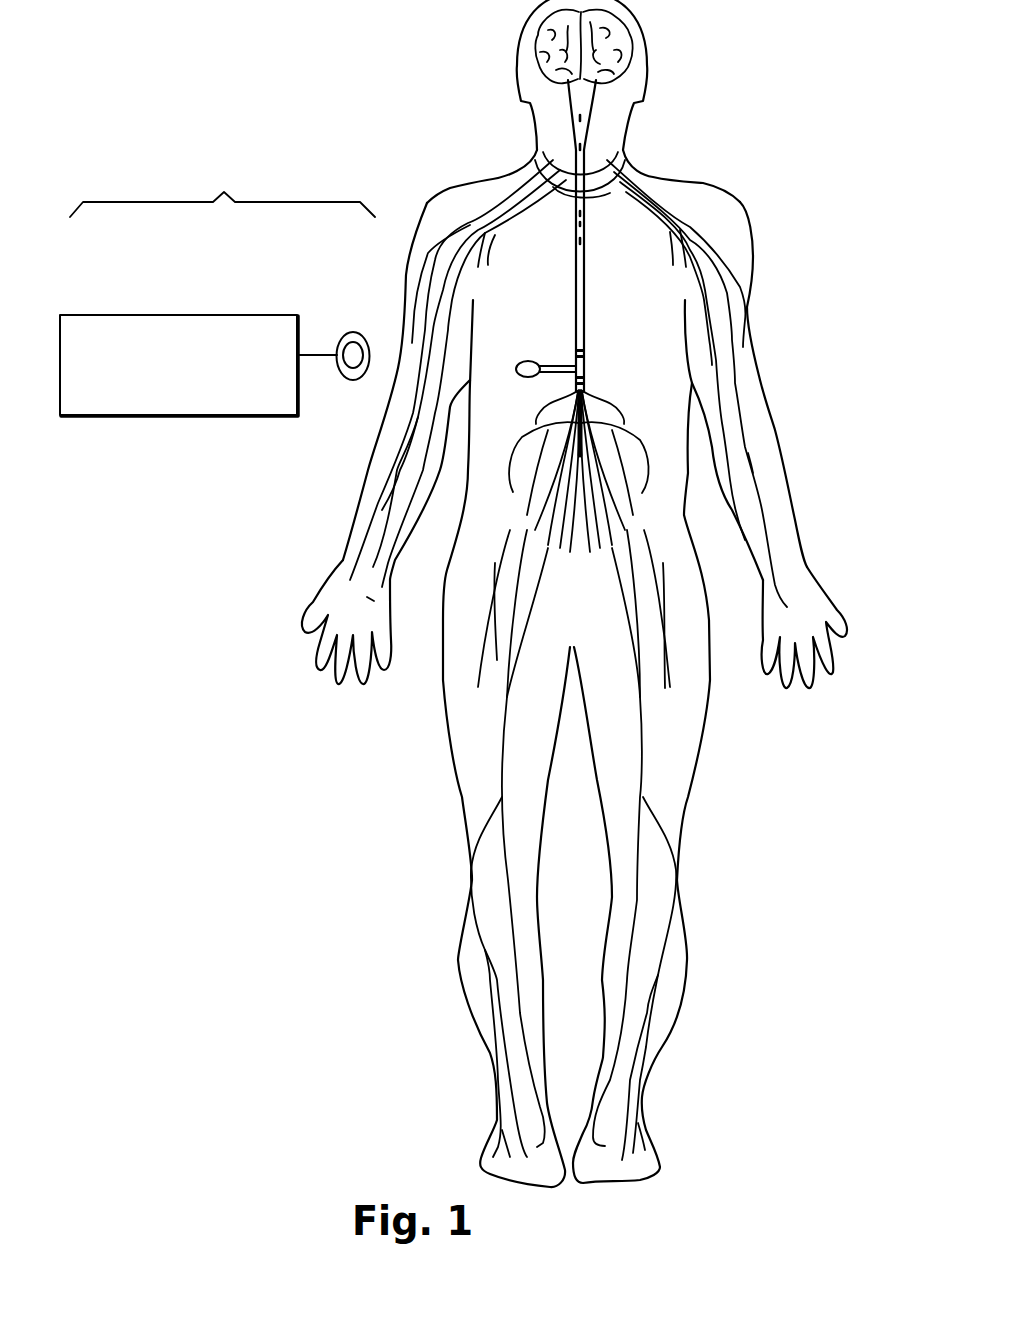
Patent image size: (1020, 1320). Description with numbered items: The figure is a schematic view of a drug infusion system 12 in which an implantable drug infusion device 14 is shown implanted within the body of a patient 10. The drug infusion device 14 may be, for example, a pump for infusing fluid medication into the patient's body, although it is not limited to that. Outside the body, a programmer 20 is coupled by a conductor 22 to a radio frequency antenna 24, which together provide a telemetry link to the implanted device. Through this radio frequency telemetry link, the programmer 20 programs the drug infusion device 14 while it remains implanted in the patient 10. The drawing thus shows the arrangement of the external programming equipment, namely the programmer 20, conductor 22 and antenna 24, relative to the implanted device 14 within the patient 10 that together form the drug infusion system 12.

The patient 10 is at (458, 175).
The drug infusion system 12 is at (222, 193).
The implantable drug infusion device 14 is at (520, 361).
The programmer 20 is at (143, 314).
The conductor 22 is at (316, 353).
The radio frequency antenna 24 is at (353, 333).